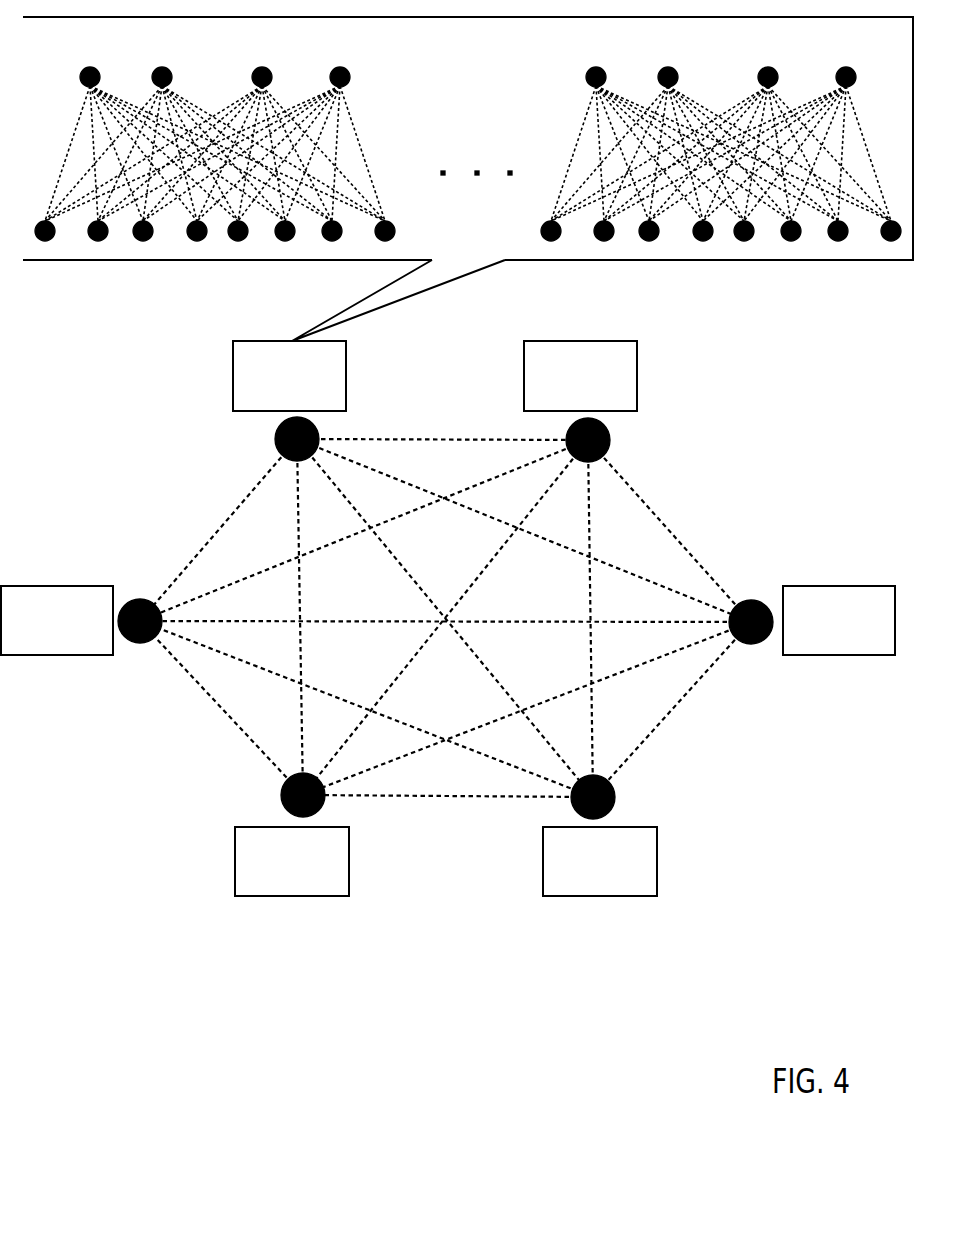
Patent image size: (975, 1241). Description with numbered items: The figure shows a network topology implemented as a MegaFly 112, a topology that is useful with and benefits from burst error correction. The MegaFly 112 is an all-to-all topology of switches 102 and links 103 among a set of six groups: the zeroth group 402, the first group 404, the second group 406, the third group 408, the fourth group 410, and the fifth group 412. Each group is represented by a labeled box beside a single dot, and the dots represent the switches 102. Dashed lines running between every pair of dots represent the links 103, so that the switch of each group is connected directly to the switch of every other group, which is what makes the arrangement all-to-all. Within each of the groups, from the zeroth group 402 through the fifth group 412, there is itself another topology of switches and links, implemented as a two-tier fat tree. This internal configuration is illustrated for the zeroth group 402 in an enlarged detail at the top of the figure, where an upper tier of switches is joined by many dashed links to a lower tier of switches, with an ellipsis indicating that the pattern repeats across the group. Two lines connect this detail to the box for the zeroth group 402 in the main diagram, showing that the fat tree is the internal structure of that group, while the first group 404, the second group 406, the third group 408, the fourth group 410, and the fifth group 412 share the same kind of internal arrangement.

The switches 102 is at (615, 797).
The links 103 is at (685, 523).
The MegaFly topology 112 is at (377, 920).
The Group 0 402 is at (273, 399).
The Group 1 404 is at (563, 399).
The Group 2 406 is at (822, 644).
The Group 3 408 is at (583, 885).
The Group 4 410 is at (275, 885).
The Group 5 412 is at (39, 644).